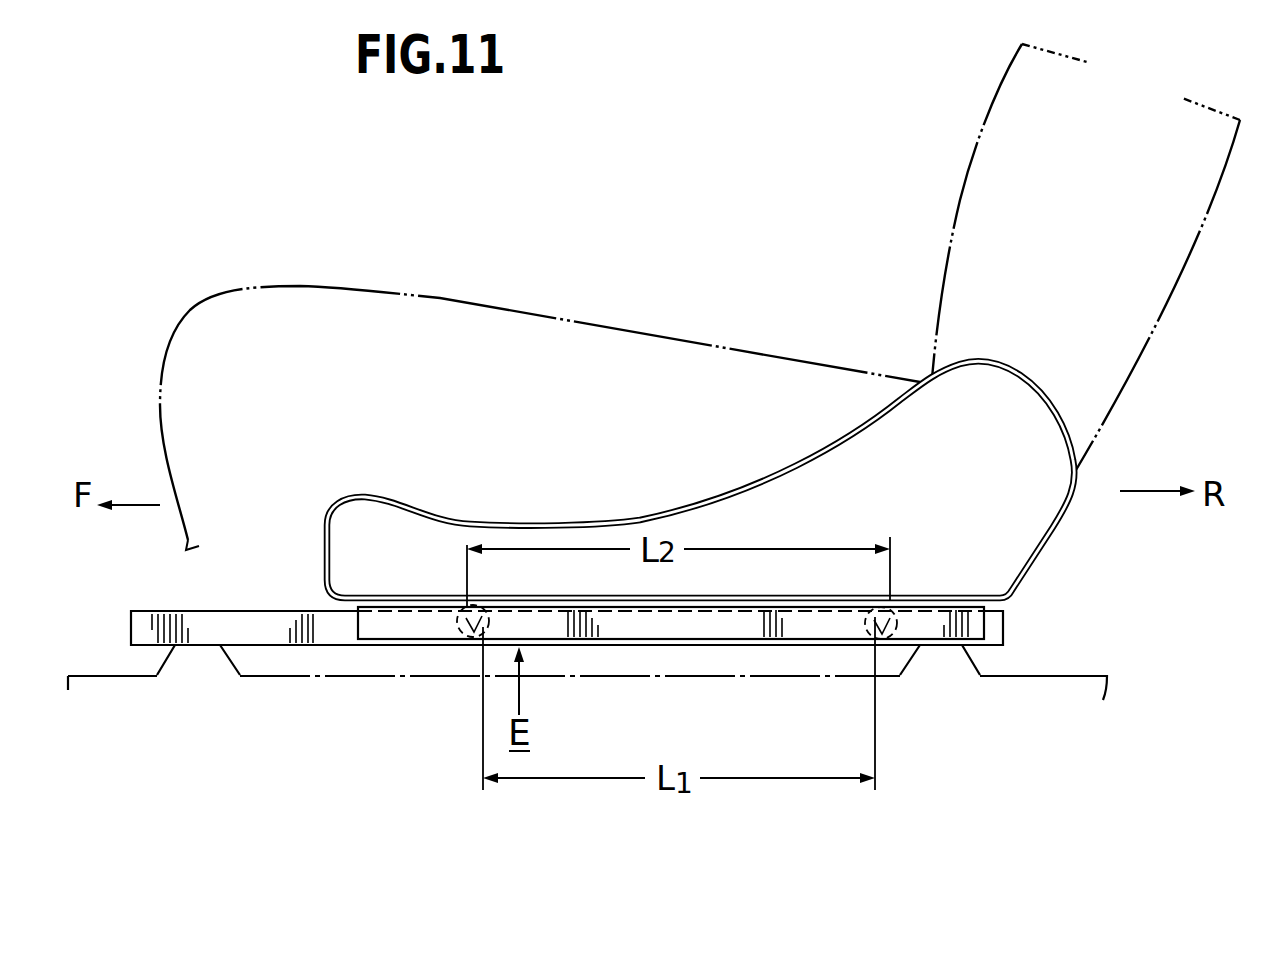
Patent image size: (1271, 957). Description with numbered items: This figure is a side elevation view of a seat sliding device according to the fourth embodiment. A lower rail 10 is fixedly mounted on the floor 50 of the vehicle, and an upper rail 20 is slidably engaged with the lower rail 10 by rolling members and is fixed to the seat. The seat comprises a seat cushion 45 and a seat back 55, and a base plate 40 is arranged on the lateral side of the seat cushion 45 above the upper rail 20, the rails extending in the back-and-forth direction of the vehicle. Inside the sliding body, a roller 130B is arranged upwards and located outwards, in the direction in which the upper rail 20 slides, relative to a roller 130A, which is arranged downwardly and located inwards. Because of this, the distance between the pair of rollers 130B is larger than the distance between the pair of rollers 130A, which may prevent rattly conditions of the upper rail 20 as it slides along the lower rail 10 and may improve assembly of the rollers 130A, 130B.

The lower rail 10 is at (323, 657).
The upper rail 20 is at (820, 655).
The base plate 40 is at (680, 510).
The seat cushion 45 is at (517, 310).
The floor 50 is at (1090, 672).
The seat back 55 is at (987, 117).
The roller 130A is at (465, 650).
The roller 130B is at (453, 607).